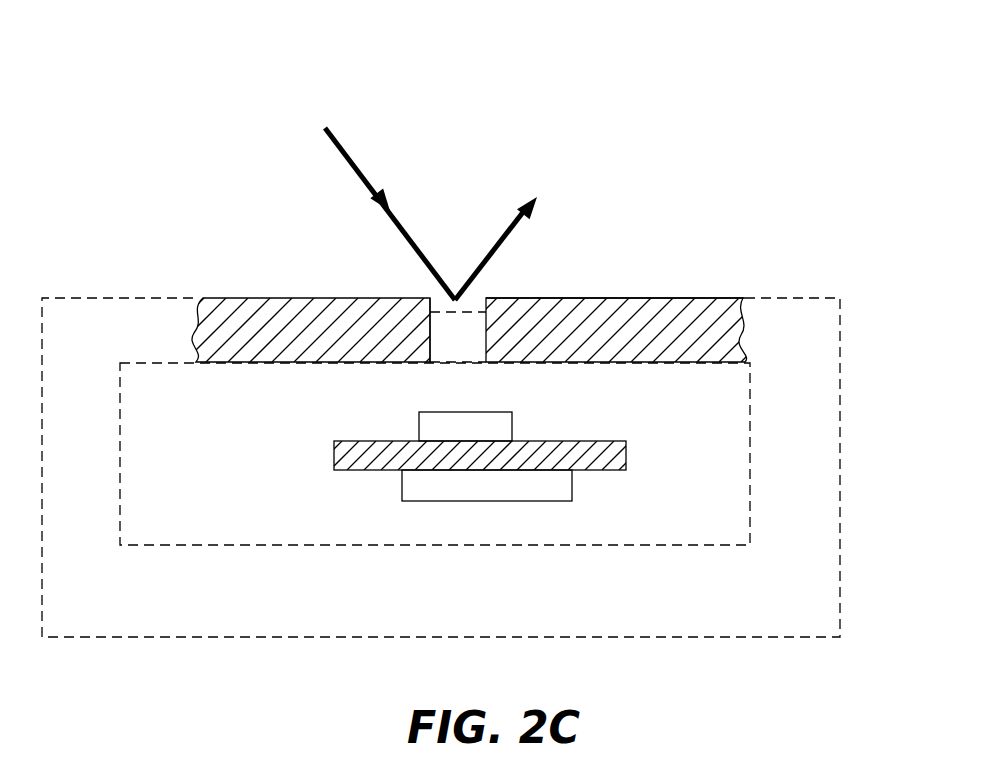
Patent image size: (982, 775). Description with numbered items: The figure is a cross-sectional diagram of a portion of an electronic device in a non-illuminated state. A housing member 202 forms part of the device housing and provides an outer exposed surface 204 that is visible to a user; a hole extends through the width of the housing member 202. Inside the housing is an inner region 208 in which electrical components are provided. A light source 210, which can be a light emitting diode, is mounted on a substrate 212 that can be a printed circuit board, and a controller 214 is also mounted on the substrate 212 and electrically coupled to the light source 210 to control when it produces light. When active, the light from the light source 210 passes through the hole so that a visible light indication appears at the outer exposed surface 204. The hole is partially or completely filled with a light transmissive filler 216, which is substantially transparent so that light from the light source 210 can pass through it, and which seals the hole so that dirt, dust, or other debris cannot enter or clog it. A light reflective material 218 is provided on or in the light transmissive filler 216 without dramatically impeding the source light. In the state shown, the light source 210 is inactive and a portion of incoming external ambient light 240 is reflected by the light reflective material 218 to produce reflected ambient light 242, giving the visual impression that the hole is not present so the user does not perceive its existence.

The housing member 202 is at (274, 313).
The outer exposed surface 204 is at (598, 286).
The inner region 208 is at (242, 467).
The light source 210 is at (511, 419).
The substrate 212 is at (606, 442).
The controller 214 is at (557, 502).
The light transmissive filler 216 is at (443, 347).
The light reflective material 218 is at (467, 303).
The incoming external ambient light 240 is at (361, 166).
The reflected ambient light 242 is at (519, 229).